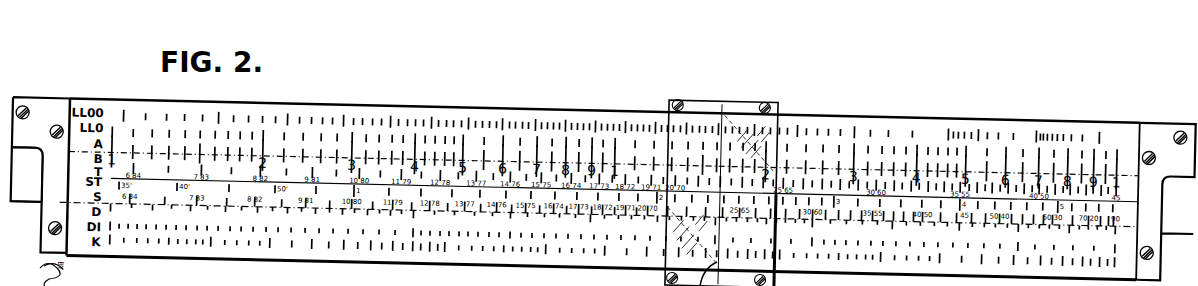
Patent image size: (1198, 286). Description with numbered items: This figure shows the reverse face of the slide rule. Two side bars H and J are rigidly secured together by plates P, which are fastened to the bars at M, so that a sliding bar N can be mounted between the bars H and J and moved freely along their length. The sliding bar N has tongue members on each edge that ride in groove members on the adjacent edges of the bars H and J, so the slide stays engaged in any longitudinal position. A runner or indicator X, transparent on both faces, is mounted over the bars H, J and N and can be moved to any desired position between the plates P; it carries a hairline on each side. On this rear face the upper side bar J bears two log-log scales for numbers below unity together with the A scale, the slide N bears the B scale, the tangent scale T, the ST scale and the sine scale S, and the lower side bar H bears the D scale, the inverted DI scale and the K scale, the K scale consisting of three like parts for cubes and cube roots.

The securing points M is at (24, 105).
The plates P is at (43, 103).
The upper side bar J is at (375, 108).
The runner or indicator X is at (722, 78).
The sliding bar N is at (25, 191).
The lower side bar H is at (192, 252).